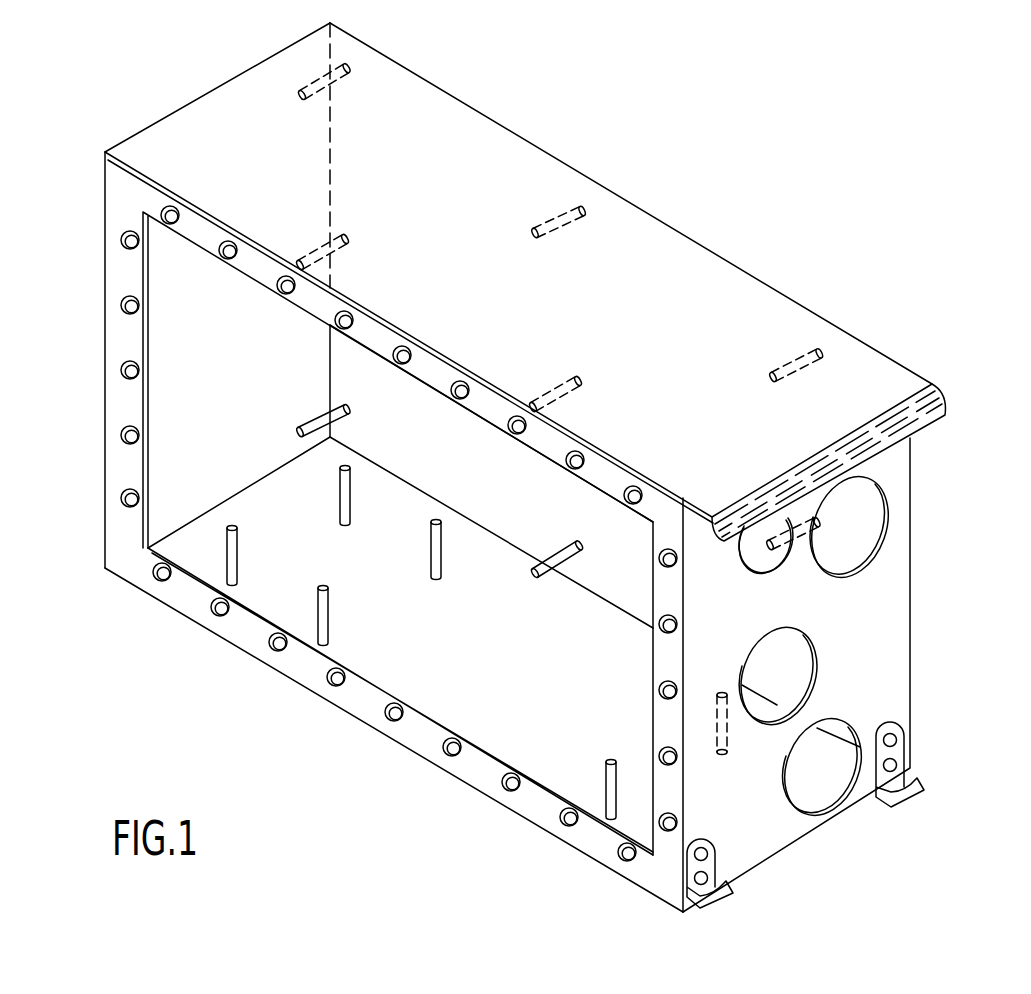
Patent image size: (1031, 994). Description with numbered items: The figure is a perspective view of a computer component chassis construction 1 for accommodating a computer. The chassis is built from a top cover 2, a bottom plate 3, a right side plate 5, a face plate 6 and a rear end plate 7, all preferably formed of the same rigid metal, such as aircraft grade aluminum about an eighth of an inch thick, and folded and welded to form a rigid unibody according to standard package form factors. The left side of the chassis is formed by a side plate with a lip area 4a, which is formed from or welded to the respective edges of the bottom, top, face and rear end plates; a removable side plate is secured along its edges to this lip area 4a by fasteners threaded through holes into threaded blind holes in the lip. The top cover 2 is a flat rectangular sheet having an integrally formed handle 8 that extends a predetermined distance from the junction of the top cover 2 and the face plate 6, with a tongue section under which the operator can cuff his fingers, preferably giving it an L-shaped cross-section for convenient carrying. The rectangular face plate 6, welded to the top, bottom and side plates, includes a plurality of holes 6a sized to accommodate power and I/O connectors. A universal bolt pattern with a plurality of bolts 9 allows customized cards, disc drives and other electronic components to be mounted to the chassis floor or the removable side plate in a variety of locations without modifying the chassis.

The computer component chassis construction 1 is at (366, 532).
The top cover 2 is at (640, 263).
The bottom plate 3 is at (605, 862).
The lip area 4a is at (125, 205).
The right side plate 5 is at (912, 508).
The face plate 6 is at (858, 617).
The holes 6a is at (820, 777).
The rear end plate 7 is at (200, 97).
The handle 8 is at (947, 400).
The bolts 9 is at (565, 215).